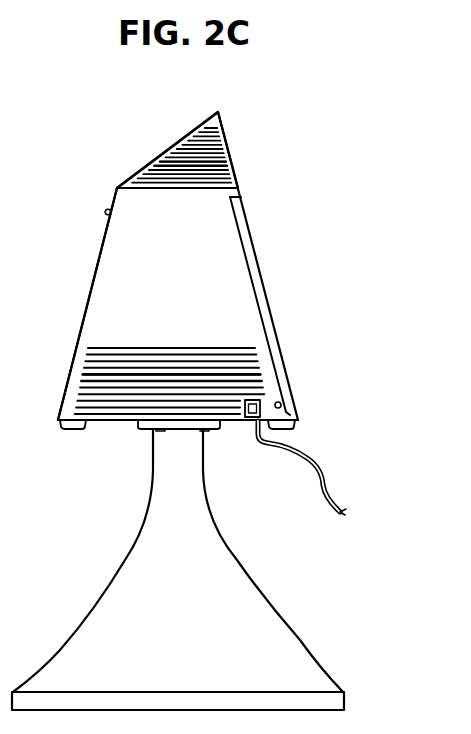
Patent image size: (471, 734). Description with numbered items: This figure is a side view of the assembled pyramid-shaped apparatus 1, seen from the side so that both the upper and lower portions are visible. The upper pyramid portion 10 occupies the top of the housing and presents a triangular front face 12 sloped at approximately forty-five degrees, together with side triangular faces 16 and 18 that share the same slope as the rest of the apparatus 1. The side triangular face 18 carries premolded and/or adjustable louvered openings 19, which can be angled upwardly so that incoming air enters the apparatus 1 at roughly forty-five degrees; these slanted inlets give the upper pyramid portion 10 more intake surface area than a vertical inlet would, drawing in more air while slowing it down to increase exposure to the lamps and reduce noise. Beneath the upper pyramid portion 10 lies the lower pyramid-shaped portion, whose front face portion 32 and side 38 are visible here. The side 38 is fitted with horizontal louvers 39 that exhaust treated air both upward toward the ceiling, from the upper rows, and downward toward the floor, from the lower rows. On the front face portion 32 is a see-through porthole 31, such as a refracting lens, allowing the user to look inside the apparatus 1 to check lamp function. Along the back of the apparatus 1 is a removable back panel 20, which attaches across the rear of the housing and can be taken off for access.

The apparatus 1 is at (280, 158).
The upper pyramid portion 10 is at (112, 110).
The triangular front face 12 is at (134, 174).
The side triangular face 16 is at (228, 142).
The side triangular face 18 is at (163, 152).
The louvered openings 19 is at (222, 175).
The removable back panel 20 is at (262, 278).
The see-through porthole 31 is at (105, 212).
The front face portion 32 is at (88, 298).
The side 38 is at (97, 327).
The horizontal louvers 39 is at (88, 382).